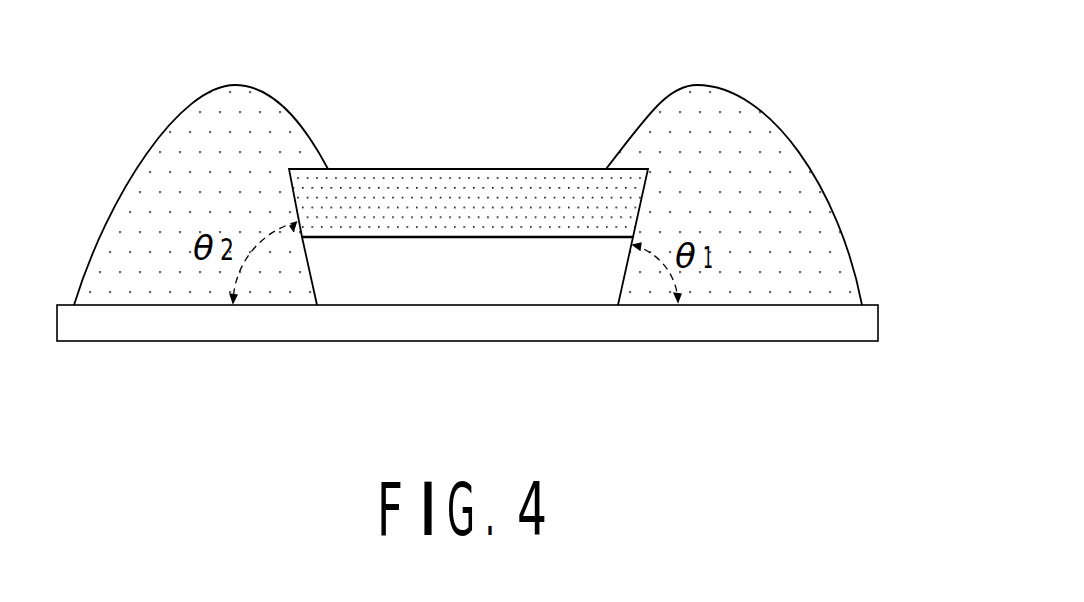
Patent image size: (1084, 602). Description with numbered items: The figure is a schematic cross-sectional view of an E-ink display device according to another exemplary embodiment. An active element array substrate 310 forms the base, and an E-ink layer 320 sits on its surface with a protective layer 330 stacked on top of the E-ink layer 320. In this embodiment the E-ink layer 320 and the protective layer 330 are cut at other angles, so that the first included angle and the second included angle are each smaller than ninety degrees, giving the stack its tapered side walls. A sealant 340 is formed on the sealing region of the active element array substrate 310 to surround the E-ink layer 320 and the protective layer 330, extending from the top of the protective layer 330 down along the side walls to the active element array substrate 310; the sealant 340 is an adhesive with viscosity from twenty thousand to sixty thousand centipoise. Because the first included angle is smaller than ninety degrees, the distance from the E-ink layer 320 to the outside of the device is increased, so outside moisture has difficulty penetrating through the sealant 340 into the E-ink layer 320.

The active element array substrate 310 is at (852, 326).
The E-ink layer 320 is at (477, 292).
The protective layer 330 is at (457, 182).
The sealant 340 is at (238, 105).